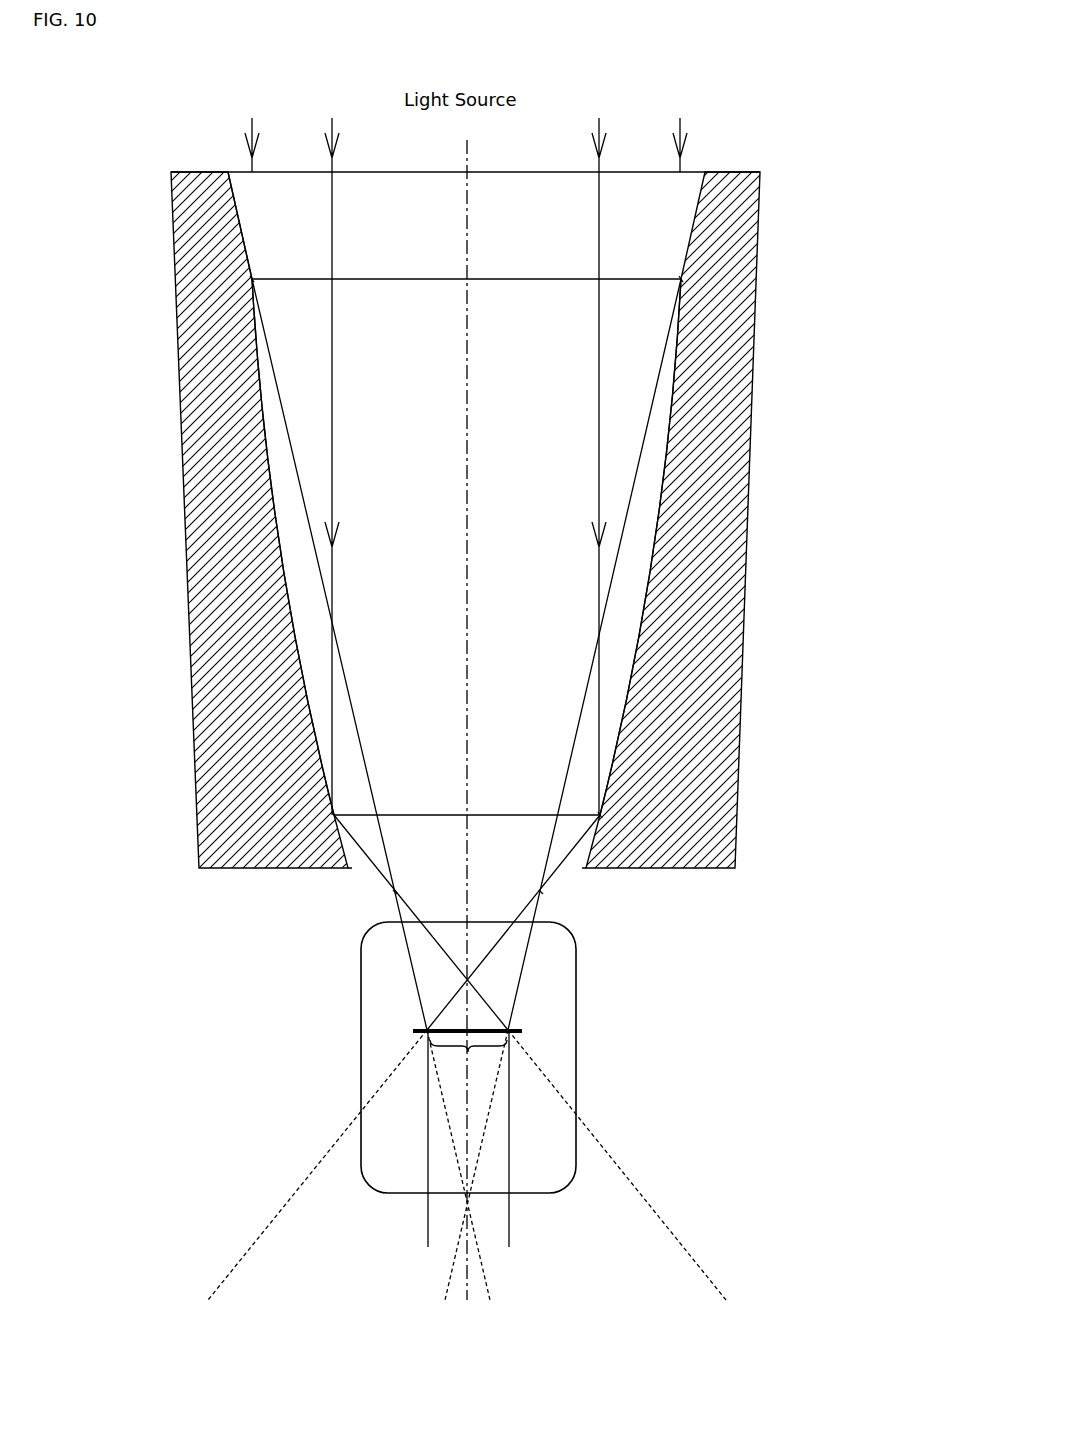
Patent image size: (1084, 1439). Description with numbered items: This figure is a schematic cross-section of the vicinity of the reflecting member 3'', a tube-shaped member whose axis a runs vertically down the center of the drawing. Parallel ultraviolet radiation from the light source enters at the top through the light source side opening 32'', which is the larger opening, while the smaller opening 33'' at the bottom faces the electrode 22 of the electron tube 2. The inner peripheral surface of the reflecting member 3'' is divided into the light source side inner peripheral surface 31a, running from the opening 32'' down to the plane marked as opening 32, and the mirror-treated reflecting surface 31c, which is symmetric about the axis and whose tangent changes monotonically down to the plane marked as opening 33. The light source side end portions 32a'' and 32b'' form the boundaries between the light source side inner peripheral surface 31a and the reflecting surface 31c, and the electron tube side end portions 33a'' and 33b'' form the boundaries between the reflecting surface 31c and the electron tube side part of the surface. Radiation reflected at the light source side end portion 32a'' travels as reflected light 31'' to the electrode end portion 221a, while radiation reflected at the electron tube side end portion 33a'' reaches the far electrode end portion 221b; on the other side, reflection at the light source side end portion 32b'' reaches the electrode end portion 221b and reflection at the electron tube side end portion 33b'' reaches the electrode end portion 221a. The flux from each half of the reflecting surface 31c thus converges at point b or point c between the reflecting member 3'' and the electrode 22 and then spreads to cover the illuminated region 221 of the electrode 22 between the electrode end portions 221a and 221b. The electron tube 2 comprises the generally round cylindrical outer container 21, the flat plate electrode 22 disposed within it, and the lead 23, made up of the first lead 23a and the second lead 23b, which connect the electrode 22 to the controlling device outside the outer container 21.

The reflecting member 3'' is at (416, 518).
The light source side inner peripheral surface 31a is at (240, 222).
The opening 32 is at (466, 258).
The light source side end portion 32a'' is at (279, 299).
The light source side end portion 32b'' is at (652, 299).
The light source side opening 32'' is at (465, 149).
The optical axis a is at (466, 147).
The reflected light ray 31'' is at (466, 789).
The reflecting surface 31c is at (268, 433).
The electron tube side end portion 33a'' is at (370, 784).
The electron tube side end portion 33b'' is at (563, 784).
The opening 33 is at (467, 837).
The opening 33'' is at (467, 889).
The point b is at (394, 893).
The point c is at (541, 893).
The electron tube 2 is at (429, 1099).
The outer container 21 is at (361, 990).
The electrode 22 is at (413, 1031).
The electrode end portion 221a is at (425, 1024).
The electrode end portion 221b is at (510, 1024).
The illuminated region 221 is at (468, 1061).
The first lead 23a is at (428, 1222).
The second lead 23b is at (509, 1222).
The lead 23 is at (463, 1157).